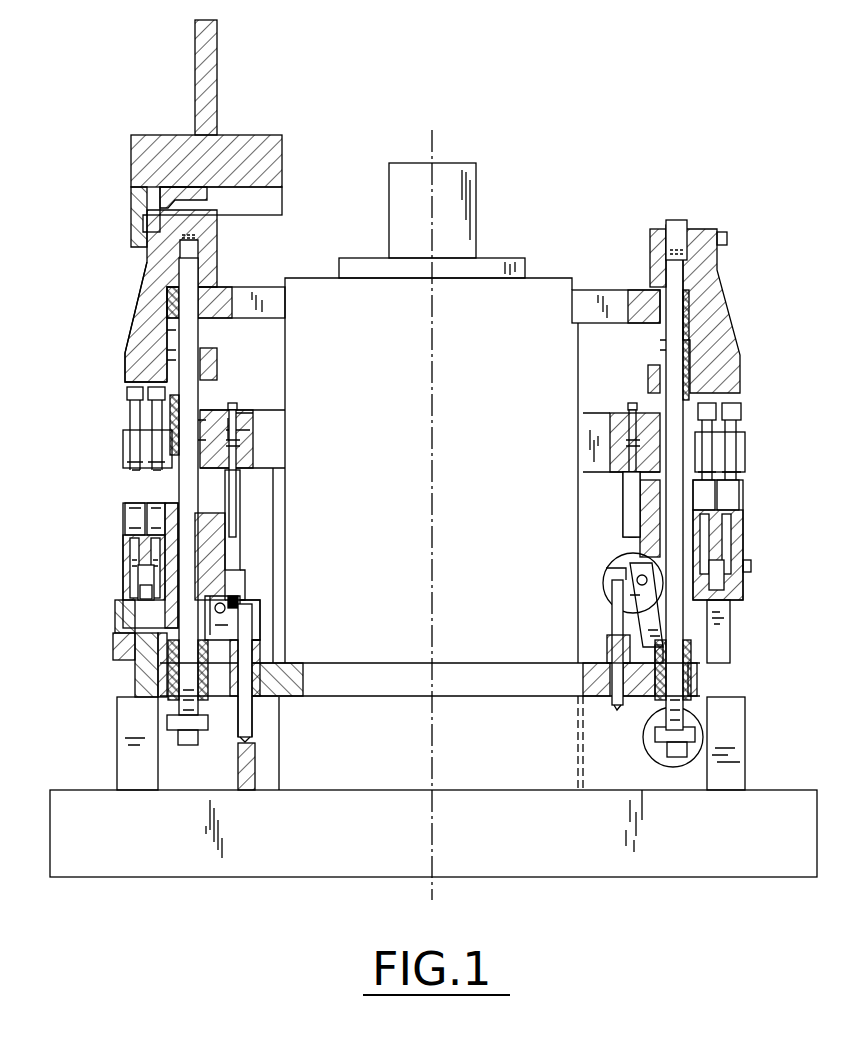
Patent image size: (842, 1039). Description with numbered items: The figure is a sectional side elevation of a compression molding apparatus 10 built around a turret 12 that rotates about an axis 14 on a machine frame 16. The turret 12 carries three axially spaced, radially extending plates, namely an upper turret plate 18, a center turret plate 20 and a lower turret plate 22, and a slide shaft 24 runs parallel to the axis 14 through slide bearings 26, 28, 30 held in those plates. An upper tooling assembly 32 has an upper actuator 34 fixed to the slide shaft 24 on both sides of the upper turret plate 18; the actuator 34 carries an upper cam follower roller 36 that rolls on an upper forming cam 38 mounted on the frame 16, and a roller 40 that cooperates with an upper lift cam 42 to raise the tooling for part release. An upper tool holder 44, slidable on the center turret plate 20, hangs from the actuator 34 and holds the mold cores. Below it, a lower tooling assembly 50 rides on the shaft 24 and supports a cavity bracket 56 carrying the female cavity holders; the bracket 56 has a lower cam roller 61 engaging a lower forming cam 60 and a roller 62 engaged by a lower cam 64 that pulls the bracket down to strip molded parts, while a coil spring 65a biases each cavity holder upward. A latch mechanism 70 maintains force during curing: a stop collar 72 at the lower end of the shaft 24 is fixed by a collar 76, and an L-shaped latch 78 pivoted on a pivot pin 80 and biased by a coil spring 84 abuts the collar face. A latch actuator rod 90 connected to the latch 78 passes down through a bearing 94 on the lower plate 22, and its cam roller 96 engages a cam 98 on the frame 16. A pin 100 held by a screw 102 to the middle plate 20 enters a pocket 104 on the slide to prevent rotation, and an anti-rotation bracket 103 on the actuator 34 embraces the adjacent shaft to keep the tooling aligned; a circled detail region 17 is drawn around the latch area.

The compression molding apparatus 10 is at (702, 47).
The turret 12 is at (542, 276).
The axis 14 is at (437, 150).
The machine frame 16 is at (212, 58).
The detail circle 17 is at (608, 584).
The upper turret plate 18 is at (274, 300).
The center turret plate 20 is at (267, 413).
The lower turret plate 22 is at (366, 682).
The slide shaft 24 is at (188, 387).
The slide bearing 26 is at (232, 292).
The slide bearing 28 is at (212, 414).
The slide bearing 30 is at (166, 690).
The upper tooling assembly 32 is at (122, 351).
The upper actuator 34 is at (150, 292).
The upper cam follower roller 36 is at (162, 245).
The upper forming cam 38 is at (272, 198).
The roller 40 is at (142, 222).
The upper lift cam 42 is at (136, 204).
The upper tool holder 44 is at (125, 450).
The lower tooling assembly 50 is at (114, 548).
The cavity bracket 56 is at (126, 506).
The lower forming cam 60 is at (145, 668).
The lower cam roller 61 is at (120, 633).
The roller 62 is at (128, 608).
The lower cam 64 is at (135, 657).
The coil spring 65a is at (136, 567).
The latch mechanism 70 is at (310, 600).
The stop collar 72 is at (150, 695).
The collar 76 is at (188, 725).
The latch 78 is at (266, 613).
The pivot pin 80 is at (224, 598).
The coil spring 84 is at (240, 602).
The latch actuator rod 90 is at (247, 647).
The bearing 94 is at (255, 657).
The cam roller 96 is at (249, 739).
The cam 98 is at (258, 766).
The pin 100 is at (257, 508).
The screw 102 is at (277, 432).
The anti-rotation bracket 103 is at (693, 343).
The pocket 104 is at (240, 548).